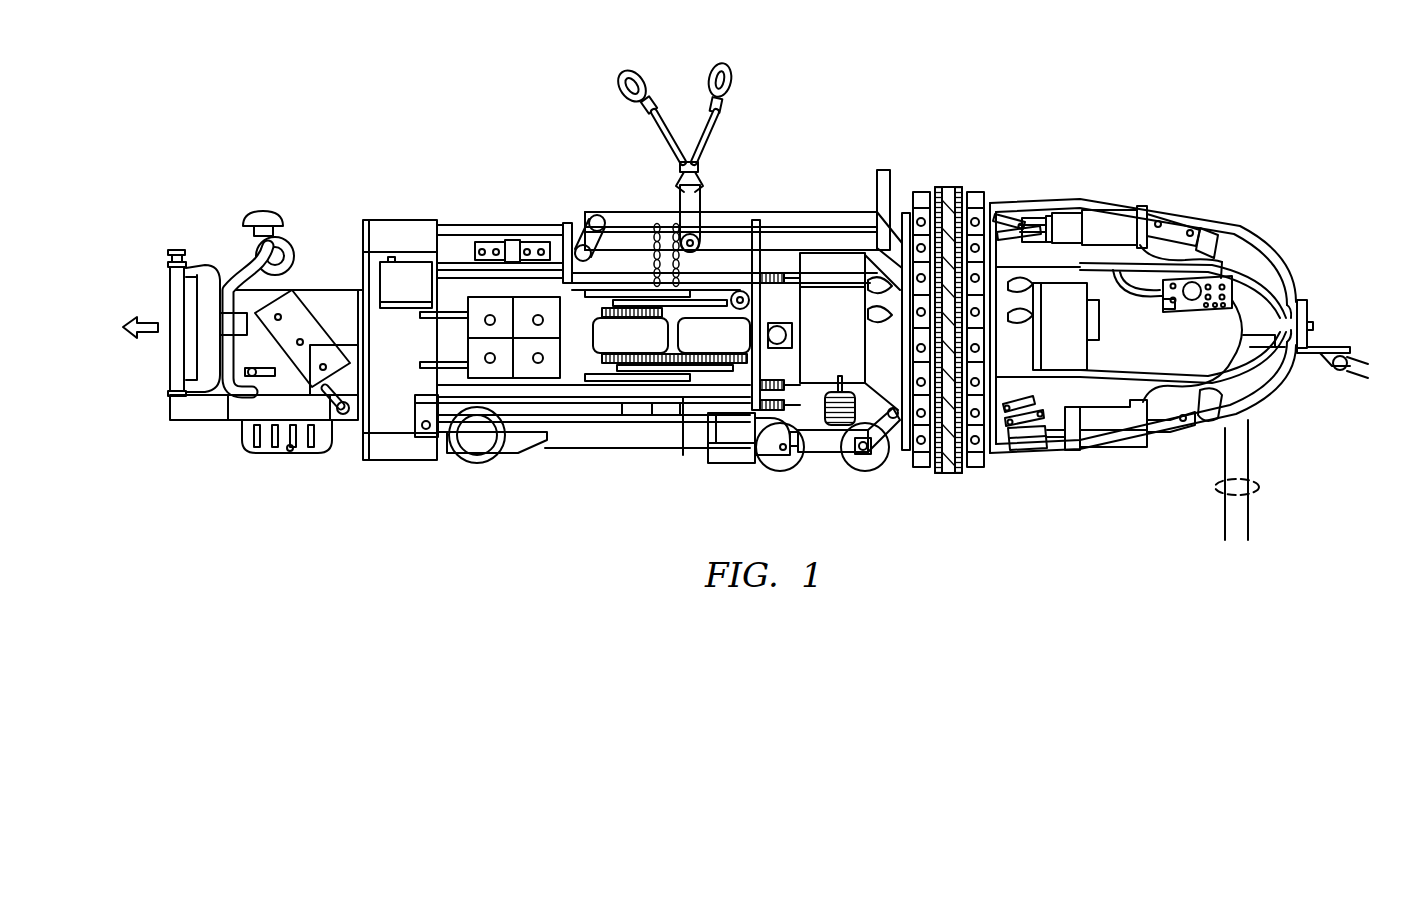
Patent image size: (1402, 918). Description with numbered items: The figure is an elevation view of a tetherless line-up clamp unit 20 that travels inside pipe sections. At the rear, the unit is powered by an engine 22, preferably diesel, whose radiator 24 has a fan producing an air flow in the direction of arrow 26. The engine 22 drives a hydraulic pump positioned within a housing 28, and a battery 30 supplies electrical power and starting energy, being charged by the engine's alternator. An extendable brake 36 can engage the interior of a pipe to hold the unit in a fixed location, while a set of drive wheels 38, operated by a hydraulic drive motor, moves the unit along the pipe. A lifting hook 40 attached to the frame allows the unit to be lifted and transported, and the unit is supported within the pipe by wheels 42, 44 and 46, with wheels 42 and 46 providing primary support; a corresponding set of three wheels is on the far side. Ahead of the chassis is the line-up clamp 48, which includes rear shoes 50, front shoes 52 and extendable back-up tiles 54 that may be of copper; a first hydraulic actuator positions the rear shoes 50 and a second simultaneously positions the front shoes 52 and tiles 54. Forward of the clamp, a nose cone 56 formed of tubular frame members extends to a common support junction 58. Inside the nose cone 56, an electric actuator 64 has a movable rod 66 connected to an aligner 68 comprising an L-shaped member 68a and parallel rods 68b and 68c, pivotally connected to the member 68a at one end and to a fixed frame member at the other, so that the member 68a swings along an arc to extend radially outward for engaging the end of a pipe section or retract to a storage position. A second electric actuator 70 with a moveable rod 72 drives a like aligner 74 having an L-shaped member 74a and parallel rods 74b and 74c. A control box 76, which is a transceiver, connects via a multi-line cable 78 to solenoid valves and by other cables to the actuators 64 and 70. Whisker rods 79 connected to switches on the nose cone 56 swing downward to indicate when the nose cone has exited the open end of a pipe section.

The tetherless line-up clamp unit 20 is at (492, 119).
The engine 22 is at (265, 180).
The radiator 24 is at (172, 250).
The arrow 26 is at (140, 340).
The housing 28 is at (392, 420).
The battery 30 is at (406, 248).
The extendable brake 36 is at (457, 330).
The drive wheels 38 is at (604, 362).
The lifting hook 40 is at (720, 56).
The wheel 42 is at (474, 458).
The wheel 44 is at (786, 456).
The wheel 46 is at (870, 456).
The line-up clamp 48 is at (963, 130).
The rear shoes 50 is at (922, 472).
The front shoes 52 is at (977, 472).
The extendable back-up tiles 54 is at (948, 187).
The nose cone 56 is at (1247, 233).
The common support junction 58 is at (1312, 309).
The electric actuator 64 is at (1120, 218).
The movable rod 66 is at (1067, 212).
The aligner 68 is at (1066, 131).
The L-shaped member 68a is at (1048, 244).
The parallel rod 68b is at (1037, 212).
The parallel rod 68c is at (1006, 214).
The electric actuator 70 is at (1105, 438).
The moveable rod 72 is at (1050, 442).
The aligner 74 is at (1042, 540).
The L-shaped member 74a is at (1037, 442).
The parallel rod 74b is at (1030, 398).
The parallel rod 74c is at (1012, 448).
The control box 76 is at (1187, 308).
The multi-line cable 78 is at (1123, 293).
The whisker rods 79 is at (1258, 486).